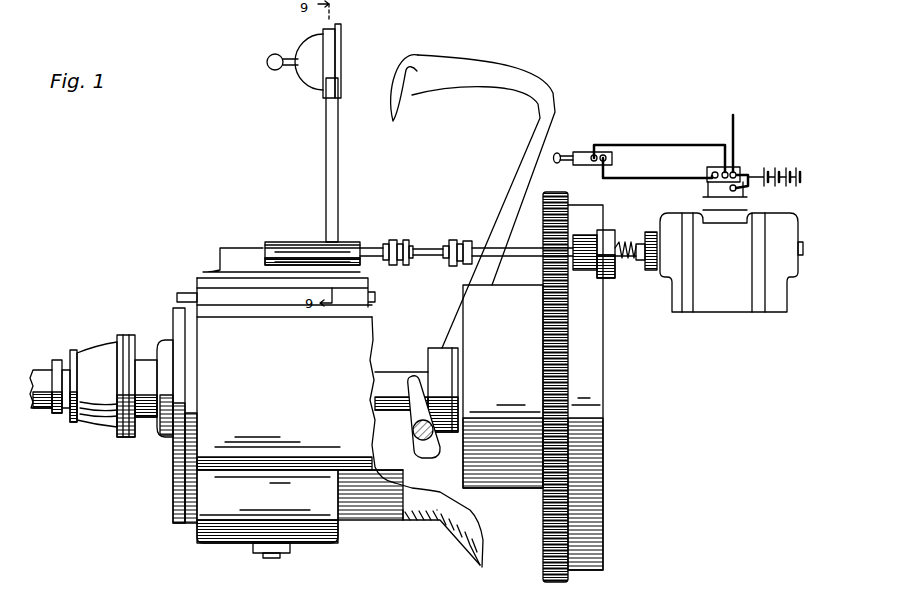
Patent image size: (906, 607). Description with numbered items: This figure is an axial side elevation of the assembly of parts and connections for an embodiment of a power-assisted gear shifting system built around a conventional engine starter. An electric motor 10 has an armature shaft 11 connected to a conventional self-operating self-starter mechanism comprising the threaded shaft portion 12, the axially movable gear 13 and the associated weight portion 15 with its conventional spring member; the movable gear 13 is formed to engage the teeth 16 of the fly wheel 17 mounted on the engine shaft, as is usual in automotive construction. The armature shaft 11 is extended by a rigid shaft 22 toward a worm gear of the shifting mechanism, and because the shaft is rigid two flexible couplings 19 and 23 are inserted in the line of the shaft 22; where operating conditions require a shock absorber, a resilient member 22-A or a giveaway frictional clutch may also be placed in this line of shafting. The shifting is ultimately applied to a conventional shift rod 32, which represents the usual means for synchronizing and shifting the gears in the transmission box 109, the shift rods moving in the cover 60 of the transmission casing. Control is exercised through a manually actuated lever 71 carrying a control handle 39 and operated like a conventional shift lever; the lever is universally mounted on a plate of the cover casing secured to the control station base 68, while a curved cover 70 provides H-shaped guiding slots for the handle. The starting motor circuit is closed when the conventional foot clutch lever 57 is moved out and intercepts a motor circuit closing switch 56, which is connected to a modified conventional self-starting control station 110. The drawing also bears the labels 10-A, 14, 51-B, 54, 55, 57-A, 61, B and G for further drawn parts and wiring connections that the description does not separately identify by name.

The electric motor 10 is at (728, 302).
The solenoid terminal block 10-A is at (752, 166).
The armature shaft 11 is at (802, 254).
The threaded shaft portion 12 is at (625, 240).
The axially movable gear 13 is at (585, 266).
The spring 14 is at (610, 273).
The weight portion 15 is at (652, 230).
The teeth 16 is at (550, 518).
The fly wheel 17 is at (592, 463).
The flexible coupling 19 is at (398, 240).
The rigid shaft 22 is at (428, 263).
The resilient member 22-A is at (360, 243).
The flexible coupling 23 is at (457, 238).
The shift rod 32 is at (177, 297).
The control handle 39 is at (267, 63).
The wire 51-B is at (735, 120).
The wire 54 is at (645, 142).
The wire 55 is at (627, 180).
The motor circuit closing switch 56 is at (590, 152).
The foot clutch lever 57 is at (550, 108).
The pedal lever 57-A is at (467, 466).
The cover 60 is at (232, 258).
The housing 61 is at (293, 247).
The control station base 68 is at (330, 61).
The curved cover 70 is at (310, 79).
The manually actuated lever 71 is at (290, 57).
The transmission box 109 is at (282, 397).
The self-starting control station 110 is at (735, 204).
The battery B is at (767, 168).
The generator G is at (801, 176).